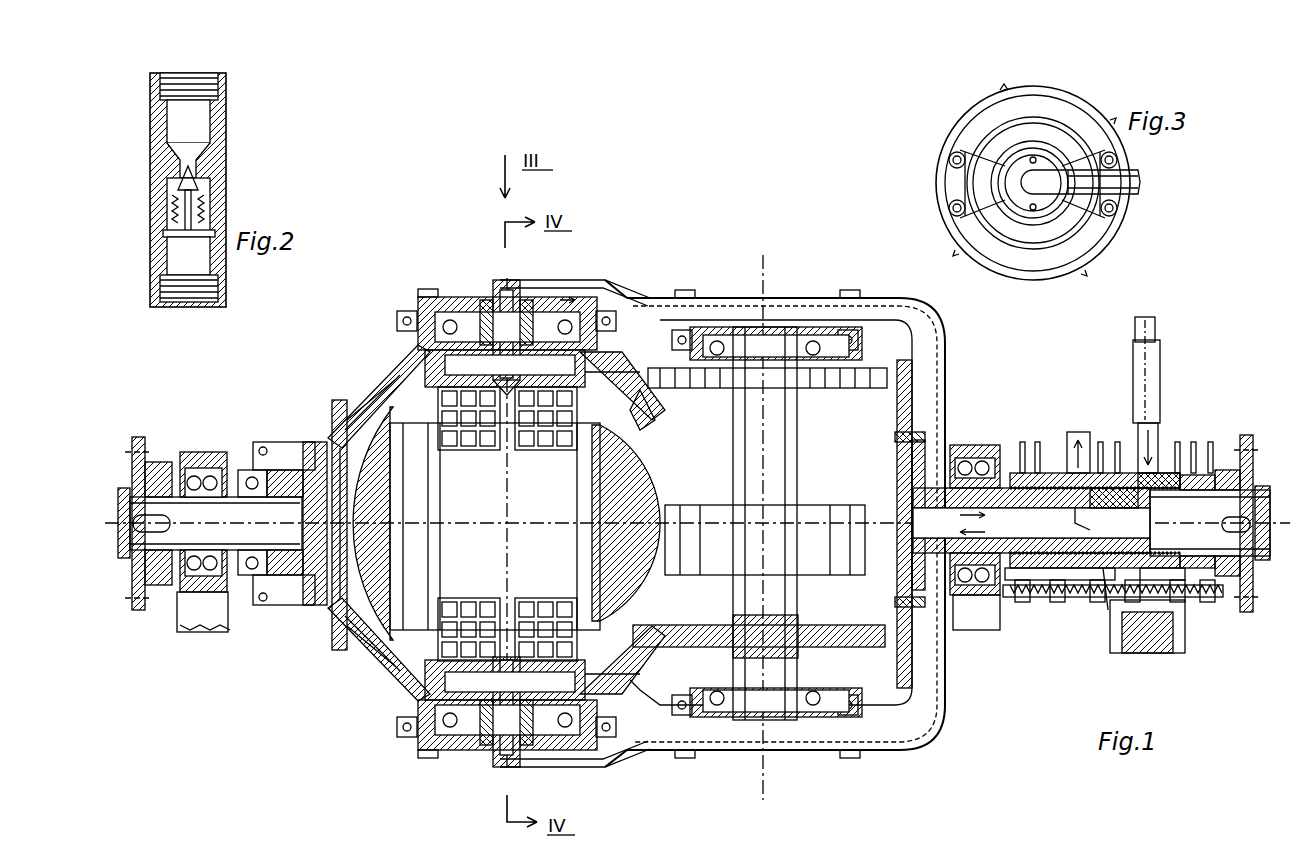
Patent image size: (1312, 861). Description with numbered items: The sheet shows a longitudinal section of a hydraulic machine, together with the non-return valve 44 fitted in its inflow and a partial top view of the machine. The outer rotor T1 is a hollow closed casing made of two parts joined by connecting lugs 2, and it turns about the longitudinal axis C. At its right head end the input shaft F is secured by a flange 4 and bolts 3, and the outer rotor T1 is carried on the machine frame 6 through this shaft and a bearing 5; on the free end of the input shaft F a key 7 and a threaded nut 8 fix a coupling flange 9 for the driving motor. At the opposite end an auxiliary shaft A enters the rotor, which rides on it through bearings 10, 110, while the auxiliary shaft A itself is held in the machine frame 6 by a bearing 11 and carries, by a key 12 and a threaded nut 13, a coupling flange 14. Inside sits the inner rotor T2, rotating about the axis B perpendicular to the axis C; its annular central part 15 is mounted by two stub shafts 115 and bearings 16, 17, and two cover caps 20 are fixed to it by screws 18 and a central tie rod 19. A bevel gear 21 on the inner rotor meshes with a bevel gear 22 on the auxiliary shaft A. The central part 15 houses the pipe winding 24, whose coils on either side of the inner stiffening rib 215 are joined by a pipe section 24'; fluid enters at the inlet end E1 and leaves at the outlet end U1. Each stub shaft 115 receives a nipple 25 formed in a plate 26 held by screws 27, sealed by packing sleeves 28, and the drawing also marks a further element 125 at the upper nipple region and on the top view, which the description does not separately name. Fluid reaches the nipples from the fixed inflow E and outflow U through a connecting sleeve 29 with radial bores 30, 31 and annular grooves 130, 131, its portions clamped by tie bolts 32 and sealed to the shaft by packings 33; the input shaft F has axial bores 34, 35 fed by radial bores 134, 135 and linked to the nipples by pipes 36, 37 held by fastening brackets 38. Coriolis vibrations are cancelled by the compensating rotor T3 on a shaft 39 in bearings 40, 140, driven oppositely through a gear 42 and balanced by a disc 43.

In FIG. 1, the connecting lugs 2 is at (265, 447).
In FIG. 1, the bolts 3 is at (895, 437).
In FIG. 1, the flange 4 is at (912, 470).
In FIG. 1, the bearing 5 is at (966, 458).
In FIG. 1, the machine frame 6 is at (198, 630).
In FIG. 1, the key 7 is at (1235, 556).
In FIG. 1, the threaded nut 8 is at (1262, 486).
In FIG. 1, the coupling flange 9 is at (1247, 435).
In FIG. 1, the bearing 10 is at (250, 470).
In FIG. 1, the bearing 11 is at (196, 462).
In FIG. 1, the key 12 is at (150, 530).
In FIG. 1, the threaded nut 13 is at (124, 488).
In FIG. 1, the coupling flange 14 is at (138, 610).
In FIG. 1, the annular central part 15 is at (648, 300).
In FIG. 1, the bearing 16 is at (600, 290).
In FIG. 1, the bearing 17 is at (430, 745).
In FIG. 1, the screws 18 is at (590, 380).
In FIG. 1, the central tie rod 19 is at (485, 525).
In FIG. 1, the cover caps 20 is at (370, 470).
In FIG. 1, the bevel gear 21 is at (660, 418).
In FIG. 1, the bevel gear 22 is at (345, 640).
In FIG. 1, the pipe winding 24 is at (469, 434).
In FIG. 1, the pipe section 24' is at (546, 606).
In FIG. 1, the nipple 25 is at (488, 300).
In FIG. 3, the plate 26 is at (960, 180).
In FIG. 1, the plate 26 is at (440, 300).
In FIG. 3, the screws 27 is at (949, 158).
In FIG. 1, the screws 27 is at (418, 292).
In FIG. 1, the packing sleeves 28 is at (425, 362).
In FIG. 1, the connecting sleeve 29 is at (1124, 462).
In FIG. 1, the radial bore 30 is at (1060, 470).
In FIG. 1, the radial bore 31 is at (1160, 475).
In FIG. 1, the tie bolts 32 is at (1104, 610).
In FIG. 1, the packings 33 is at (1022, 602).
In FIG. 1, the axial bore 34 is at (1012, 510).
In FIG. 1, the axial bore 35 is at (1055, 585).
In FIG. 3, the pipe 36 is at (1140, 183).
In FIG. 1, the pipe 36 is at (797, 298).
In FIG. 1, the pipe 37 is at (805, 740).
In FIG. 1, the fastening brackets 38 is at (688, 290).
In FIG. 1, the shaft 39 is at (797, 422).
In FIG. 1, the bearing 40 is at (718, 335).
In FIG. 1, the gear 42 is at (835, 625).
In FIG. 1, the disc 43 is at (853, 388).
In FIG. 2, the non-return valve 44 is at (270, 190).
In FIG. 1, the non-return valve 44 is at (1160, 360).
In FIG. 1, the bearing 110 is at (318, 605).
In FIG. 1, the stub shafts 115 is at (448, 318).
In FIG. 3, the fluid conduit 125 is at (1045, 175).
In FIG. 1, the fluid conduit 125 is at (518, 280).
In FIG. 1, the annular groove 130 is at (1080, 600).
In FIG. 1, the annular groove 131 is at (1160, 585).
In FIG. 1, the radial bore 134 is at (1090, 480).
In FIG. 1, the radial bore 135 is at (1198, 480).
In FIG. 1, the bearing 140 is at (818, 712).
In FIG. 1, the inner stiffening rib 215 is at (510, 470).
In FIG. 1, the auxiliary shaft A is at (183, 510).
In FIG. 1, the axis B— B is at (506, 525).
In FIG. 1, the axis C— C is at (118, 523).
In FIG. 1, the inflow E is at (1156, 425).
In FIG. 1, the input shaft F is at (1232, 470).
In FIG. 1, the outflow U is at (1076, 432).
In FIG. 1, the outlet end U1 is at (530, 450).
In FIG. 1, the inlet end E1 is at (492, 612).
In FIG. 3, the outer rotor T1 is at (949, 121).
In FIG. 1, the outer rotor T1 is at (351, 377).
In FIG. 1, the inner rotor T2 is at (668, 481).
In FIG. 1, the compensating rotor T3 is at (820, 505).